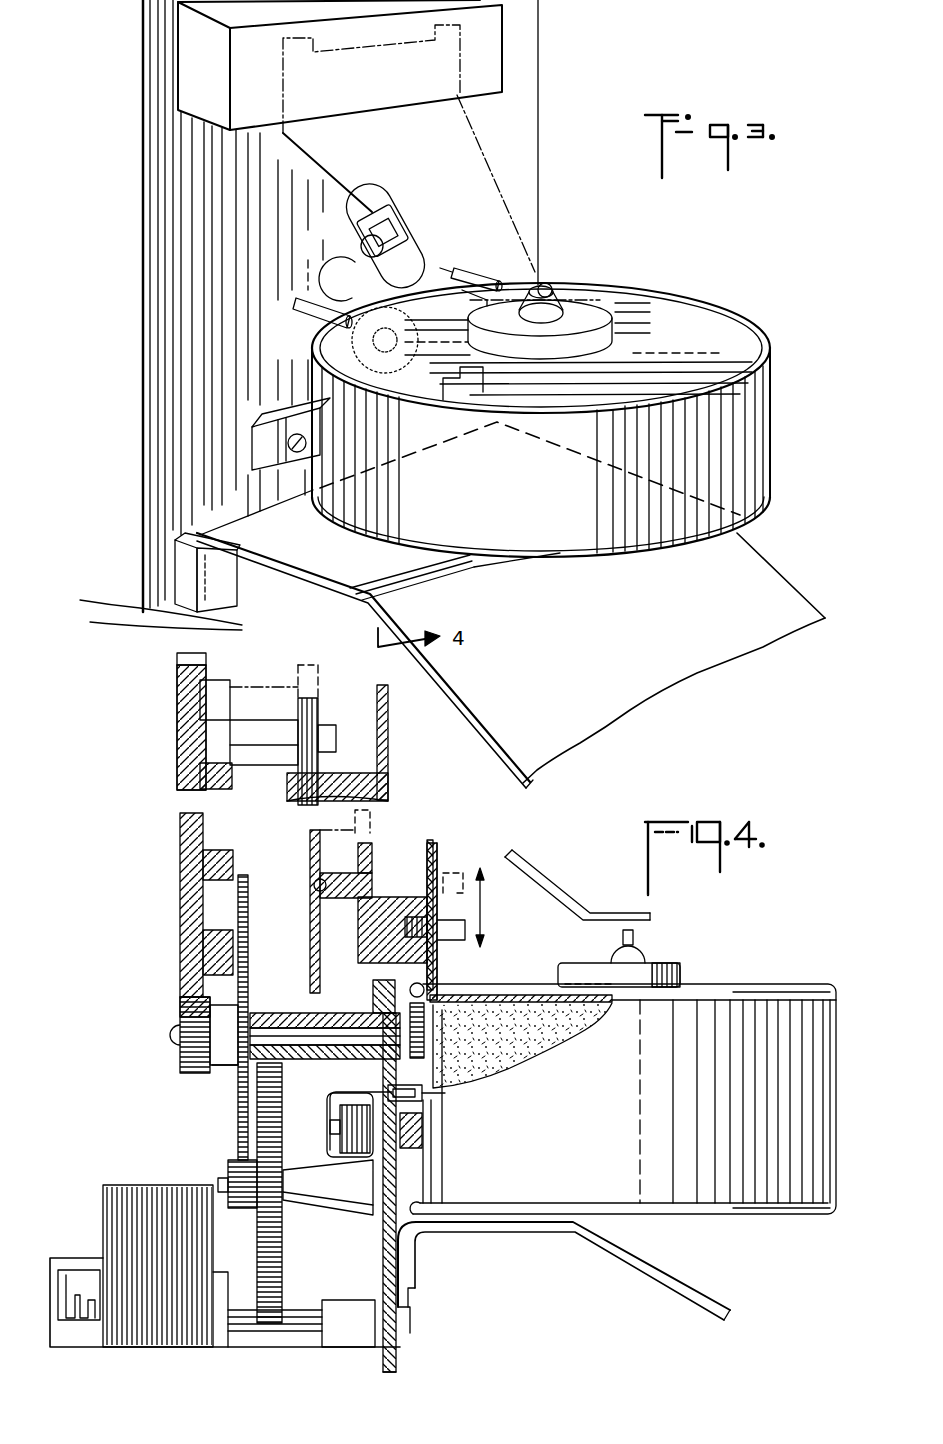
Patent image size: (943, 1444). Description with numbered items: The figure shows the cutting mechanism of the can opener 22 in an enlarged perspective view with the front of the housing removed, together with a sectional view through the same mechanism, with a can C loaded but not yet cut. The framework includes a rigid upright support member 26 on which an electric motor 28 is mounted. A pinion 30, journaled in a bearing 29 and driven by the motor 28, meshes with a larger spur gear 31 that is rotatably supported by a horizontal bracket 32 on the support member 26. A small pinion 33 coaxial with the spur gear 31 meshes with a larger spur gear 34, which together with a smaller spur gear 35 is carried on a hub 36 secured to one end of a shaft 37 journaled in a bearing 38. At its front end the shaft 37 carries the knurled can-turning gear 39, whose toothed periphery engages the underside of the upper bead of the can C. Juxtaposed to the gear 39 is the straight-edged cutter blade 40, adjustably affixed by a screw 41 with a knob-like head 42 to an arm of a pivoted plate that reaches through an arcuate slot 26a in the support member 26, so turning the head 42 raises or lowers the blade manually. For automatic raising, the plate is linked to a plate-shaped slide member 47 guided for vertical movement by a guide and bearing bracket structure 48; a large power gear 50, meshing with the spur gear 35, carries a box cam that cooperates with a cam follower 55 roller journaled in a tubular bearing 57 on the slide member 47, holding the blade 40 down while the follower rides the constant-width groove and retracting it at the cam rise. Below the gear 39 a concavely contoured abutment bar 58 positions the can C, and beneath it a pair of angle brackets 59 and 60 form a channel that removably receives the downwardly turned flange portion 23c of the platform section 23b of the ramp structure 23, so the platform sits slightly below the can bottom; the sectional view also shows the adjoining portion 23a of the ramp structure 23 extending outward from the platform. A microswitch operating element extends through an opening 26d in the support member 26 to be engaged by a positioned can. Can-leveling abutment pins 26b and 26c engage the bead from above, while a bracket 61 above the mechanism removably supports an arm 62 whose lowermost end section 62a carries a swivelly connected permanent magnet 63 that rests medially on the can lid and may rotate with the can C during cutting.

In FIG. 4, the can opener 22 is at (432, 1268).
In FIG. 3, the ramp structure 23 is at (770, 573).
In FIG. 4, the ramp structure 23 is at (700, 1292).
In FIG. 4, the chute bottom 23a is at (513, 1228).
In FIG. 3, the platform section 23b is at (250, 515).
In FIG. 3, the downwardly turned flange portion 23c is at (248, 573).
In FIG. 3, the upright support member 26 is at (162, 311).
In FIG. 4, the upright support member 26 is at (389, 733).
In FIG. 3, the slot 26a is at (358, 268).
In FIG. 3, the can-leveling abutment pin 26b is at (478, 276).
In FIG. 3, the can-leveling abutment pin 26c is at (300, 312).
In FIG. 4, the opening 26d is at (388, 1090).
In FIG. 4, the electric motor 28 is at (124, 1195).
In FIG. 4, the bearing 29 is at (347, 1332).
In FIG. 4, the pinion 30 is at (298, 1312).
In FIG. 4, the spur gear 31 is at (278, 1265).
In FIG. 4, the horizontal bracket 32 is at (345, 1208).
In FIG. 4, the pinion 33 is at (232, 1165).
In FIG. 4, the spur gear 34 is at (250, 925).
In FIG. 4, the spur gear 35 is at (226, 1062).
In FIG. 4, the hub 36 is at (222, 1068).
In FIG. 4, the shaft 37 is at (268, 1032).
In FIG. 4, the bearing 38 is at (352, 1018).
In FIG. 4, the can-turning gear 39 is at (437, 1050).
In FIG. 3, the cutter blade 40 is at (362, 233).
In FIG. 4, the cutter blade 40 is at (434, 972).
In FIG. 4, the screw 41 is at (410, 920).
In FIG. 4, the knob-like head 42 is at (465, 930).
In FIG. 4, the slide member 47 is at (311, 862).
In FIG. 4, the guide and bearing bracket structure 48 is at (372, 782).
In FIG. 4, the power gear 50 is at (195, 911).
In FIG. 4, the cam follower 55 is at (212, 747).
In FIG. 4, the tubular bearing 57 is at (262, 725).
In FIG. 3, the abutment bar 58 is at (284, 414).
In FIG. 4, the abutment bar 58 is at (425, 1132).
In FIG. 3, the angle bracket 59 is at (180, 571).
In FIG. 4, the angle bracket 60 is at (416, 1255).
In FIG. 3, the bracket 61 is at (185, 56).
In FIG. 3, the arm 62 is at (461, 98).
In FIG. 4, the arm 62 is at (528, 872).
In FIG. 3, the lowermost end section 62a is at (556, 292).
In FIG. 4, the lowermost end section 62a is at (652, 928).
In FIG. 3, the permanent magnet 63 is at (615, 330).
In FIG. 4, the permanent magnet 63 is at (684, 977).
In FIG. 4, the can C is at (823, 1078).